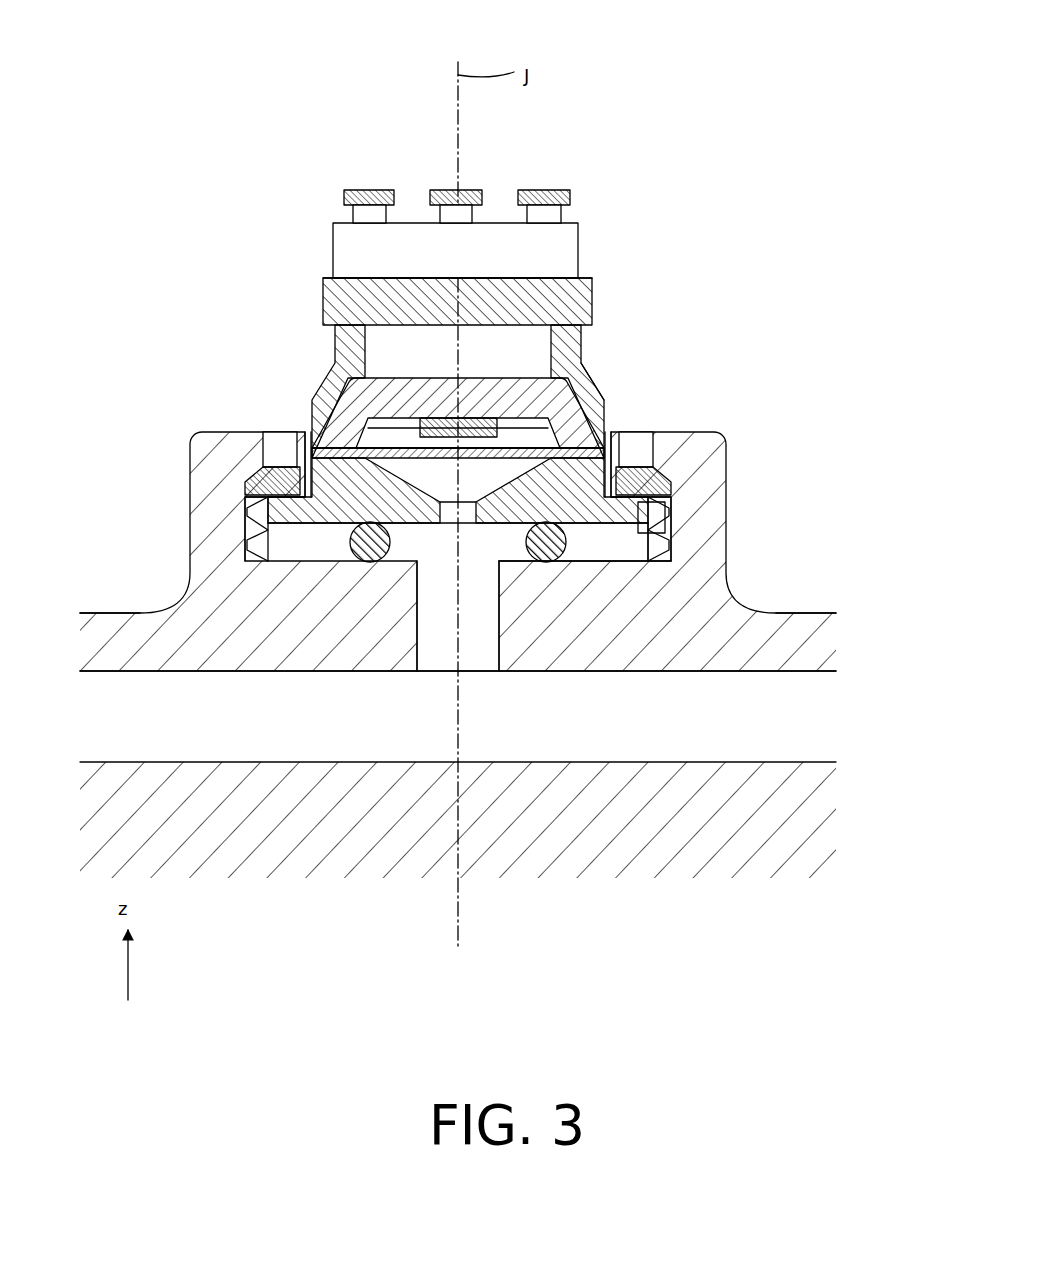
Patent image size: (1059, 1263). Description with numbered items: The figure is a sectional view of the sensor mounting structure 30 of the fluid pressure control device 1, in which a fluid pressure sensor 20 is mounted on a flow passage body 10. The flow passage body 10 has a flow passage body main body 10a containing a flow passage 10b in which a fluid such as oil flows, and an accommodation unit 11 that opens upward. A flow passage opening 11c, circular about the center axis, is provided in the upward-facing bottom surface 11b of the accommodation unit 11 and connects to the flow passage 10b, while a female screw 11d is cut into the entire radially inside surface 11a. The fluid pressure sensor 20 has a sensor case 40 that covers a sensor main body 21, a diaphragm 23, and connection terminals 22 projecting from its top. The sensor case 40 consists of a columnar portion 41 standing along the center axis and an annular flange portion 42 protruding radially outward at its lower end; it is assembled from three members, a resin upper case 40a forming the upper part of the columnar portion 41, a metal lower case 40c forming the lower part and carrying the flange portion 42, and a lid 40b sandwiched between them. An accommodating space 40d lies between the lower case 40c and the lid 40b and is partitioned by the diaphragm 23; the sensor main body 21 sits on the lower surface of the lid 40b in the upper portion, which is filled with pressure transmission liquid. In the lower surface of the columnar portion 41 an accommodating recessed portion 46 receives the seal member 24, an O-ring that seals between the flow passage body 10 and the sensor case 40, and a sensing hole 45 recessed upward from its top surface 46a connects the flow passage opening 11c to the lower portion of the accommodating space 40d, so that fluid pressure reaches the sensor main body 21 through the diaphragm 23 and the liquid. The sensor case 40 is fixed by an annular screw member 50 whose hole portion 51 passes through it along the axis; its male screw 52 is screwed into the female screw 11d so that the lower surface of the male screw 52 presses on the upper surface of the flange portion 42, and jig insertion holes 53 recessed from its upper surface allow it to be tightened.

The fluid pressure control device 1 is at (746, 88).
The flow passage body 10 is at (140, 476).
The flow passage body main body 10a is at (800, 628).
The flow passage 10b is at (772, 704).
The accommodation unit 11 is at (705, 470).
The radially inside surface 11a is at (258, 430).
The bottom surface 11b is at (641, 560).
The flow passage opening 11c is at (420, 592).
The female screw 11d is at (672, 516).
The fluid pressure sensor 20 is at (603, 179).
The sensor main body 21 is at (596, 313).
The connection terminals 22 is at (535, 189).
The diaphragm 23 is at (445, 418).
The seal member 24 is at (362, 562).
The sensor mounting structure 30 is at (306, 141).
The sensor case 40 is at (469, 492).
The upper case 40a is at (593, 280).
The lid 40b is at (590, 388).
The lower case 40c is at (612, 518).
The accommodating space 40d is at (300, 562).
The columnar portion 41 is at (318, 298).
The flange portion 42 is at (228, 478).
The sensing hole 45 is at (422, 480).
The accommodating recessed portion 46 is at (314, 562).
The top surface 46a is at (578, 535).
The screw member 50 is at (632, 421).
The hole portion 51 is at (325, 420).
The male screw 52 is at (640, 432).
The jig insertion holes 53 is at (274, 465).